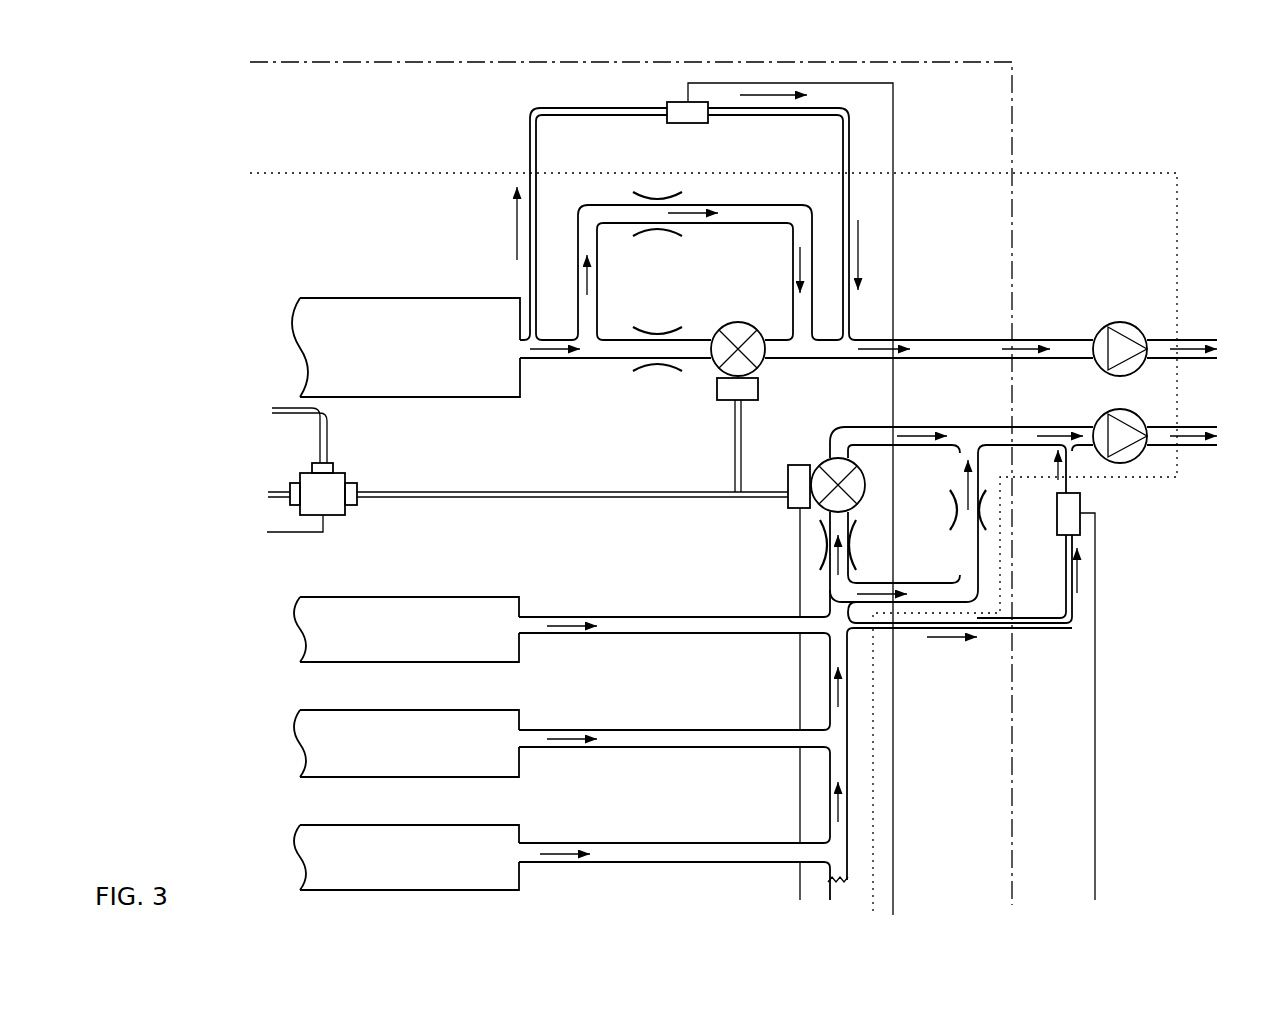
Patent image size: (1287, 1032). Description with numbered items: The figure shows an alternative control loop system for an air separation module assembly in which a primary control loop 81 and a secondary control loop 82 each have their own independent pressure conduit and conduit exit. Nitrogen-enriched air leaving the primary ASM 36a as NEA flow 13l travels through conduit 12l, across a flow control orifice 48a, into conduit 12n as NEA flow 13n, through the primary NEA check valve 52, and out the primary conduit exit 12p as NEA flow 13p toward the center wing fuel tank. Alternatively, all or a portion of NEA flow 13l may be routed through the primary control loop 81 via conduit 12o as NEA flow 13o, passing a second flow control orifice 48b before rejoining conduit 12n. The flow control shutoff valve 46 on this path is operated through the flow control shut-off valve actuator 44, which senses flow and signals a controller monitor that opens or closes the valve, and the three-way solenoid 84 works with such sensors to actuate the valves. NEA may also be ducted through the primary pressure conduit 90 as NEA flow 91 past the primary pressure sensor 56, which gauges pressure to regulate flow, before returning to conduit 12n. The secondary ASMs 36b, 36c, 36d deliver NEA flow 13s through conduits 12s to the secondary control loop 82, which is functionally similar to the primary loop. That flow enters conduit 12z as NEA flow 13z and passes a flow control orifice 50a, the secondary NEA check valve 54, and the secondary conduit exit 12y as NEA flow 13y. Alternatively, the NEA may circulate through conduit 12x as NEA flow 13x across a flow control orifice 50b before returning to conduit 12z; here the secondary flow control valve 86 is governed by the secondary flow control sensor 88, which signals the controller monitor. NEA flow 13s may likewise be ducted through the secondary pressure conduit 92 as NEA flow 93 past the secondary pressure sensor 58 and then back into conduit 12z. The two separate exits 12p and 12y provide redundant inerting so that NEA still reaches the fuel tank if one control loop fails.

The conduit 12l is at (605, 362).
The NEA flow 13l is at (553, 360).
The conduit 12n is at (920, 340).
The NEA flow 13n is at (1008, 345).
The primary pressure conduit 90 is at (545, 108).
The primary pressure sensor 56 is at (670, 103).
The NEA flow 91 is at (748, 88).
The primary control loop 81 is at (598, 192).
The conduit 12o is at (814, 245).
The NEA flow 13o is at (690, 212).
The flow control orifice 48a is at (643, 372).
The flow control orifice 48b is at (660, 232).
The flow control shutoff valve 46 is at (735, 323).
The flow control shut-off valve actuator 44 is at (748, 400).
The three-way solenoid 84 is at (340, 473).
The secondary flow control valve 86 is at (818, 466).
The secondary flow control sensor 88 is at (790, 508).
The conduit 12z is at (866, 427).
The NEA flow 13z is at (915, 432).
The primary NEA check valve 52 is at (1108, 323).
The primary conduit exit 12p is at (1168, 340).
The NEA flow 13p is at (1185, 345).
The secondary NEA check valve 54 is at (1130, 412).
The secondary conduit exit 12y is at (1186, 426).
The NEA flow 13y is at (1186, 446).
The conduit 12x is at (978, 573).
The flow control orifice 50a is at (856, 556).
The flow control orifice 50b is at (952, 520).
The NEA flow 13x is at (872, 592).
The secondary pressure conduit 92 is at (1075, 614).
The secondary pressure sensor 58 is at (1080, 501).
The NEA flow 93 is at (1058, 480).
The secondary control loop 82 is at (968, 609).
The primary ASM 36a is at (448, 364).
The secondary ASM 36b is at (458, 660).
The secondary ASM 36c is at (458, 770).
The secondary ASM 36d is at (458, 884).
The conduits 12s is at (545, 640).
The NEA flow 13s is at (557, 626).